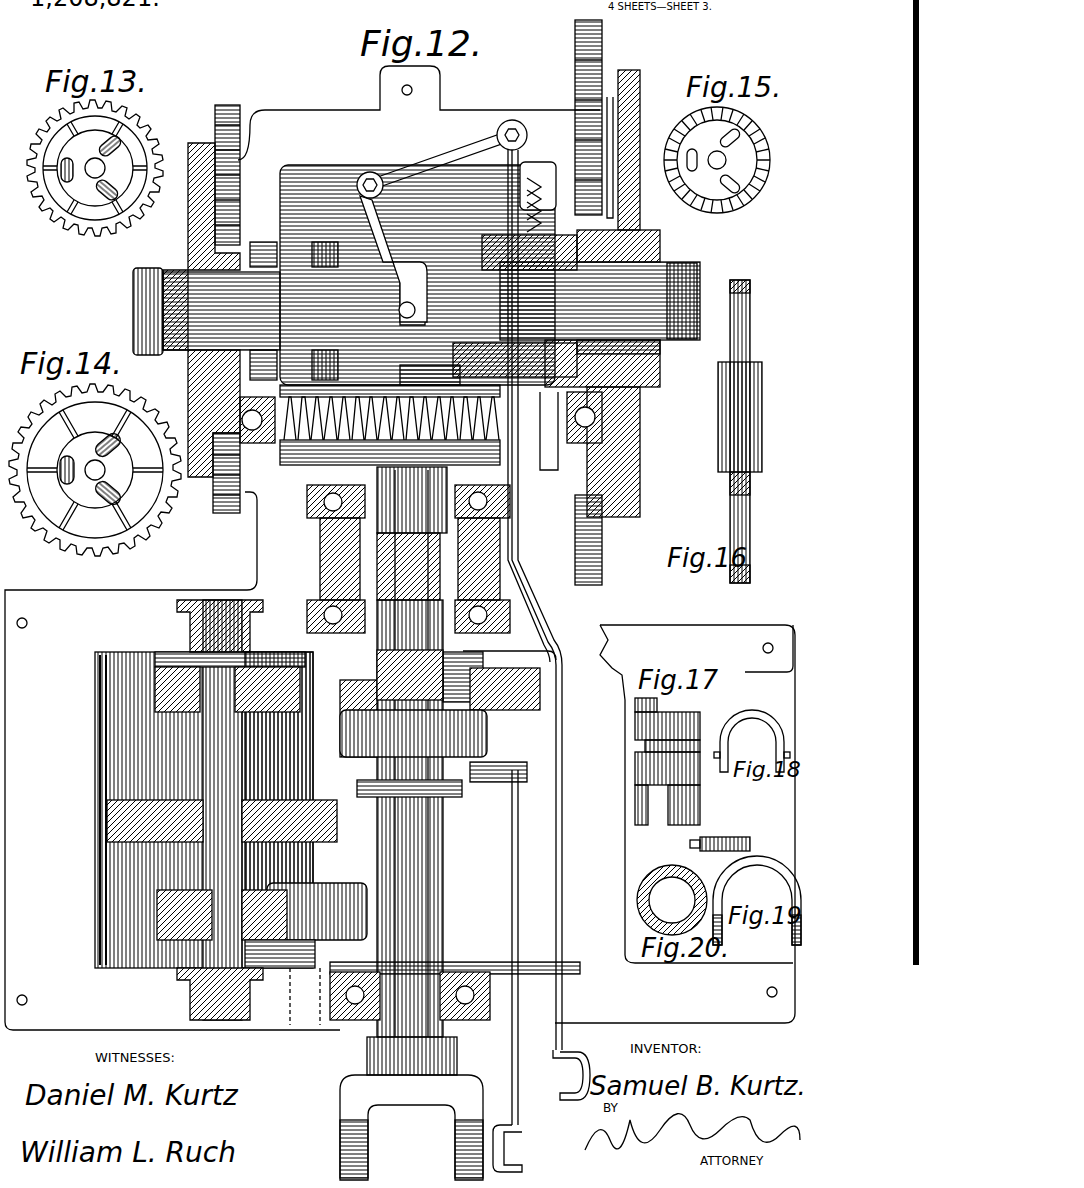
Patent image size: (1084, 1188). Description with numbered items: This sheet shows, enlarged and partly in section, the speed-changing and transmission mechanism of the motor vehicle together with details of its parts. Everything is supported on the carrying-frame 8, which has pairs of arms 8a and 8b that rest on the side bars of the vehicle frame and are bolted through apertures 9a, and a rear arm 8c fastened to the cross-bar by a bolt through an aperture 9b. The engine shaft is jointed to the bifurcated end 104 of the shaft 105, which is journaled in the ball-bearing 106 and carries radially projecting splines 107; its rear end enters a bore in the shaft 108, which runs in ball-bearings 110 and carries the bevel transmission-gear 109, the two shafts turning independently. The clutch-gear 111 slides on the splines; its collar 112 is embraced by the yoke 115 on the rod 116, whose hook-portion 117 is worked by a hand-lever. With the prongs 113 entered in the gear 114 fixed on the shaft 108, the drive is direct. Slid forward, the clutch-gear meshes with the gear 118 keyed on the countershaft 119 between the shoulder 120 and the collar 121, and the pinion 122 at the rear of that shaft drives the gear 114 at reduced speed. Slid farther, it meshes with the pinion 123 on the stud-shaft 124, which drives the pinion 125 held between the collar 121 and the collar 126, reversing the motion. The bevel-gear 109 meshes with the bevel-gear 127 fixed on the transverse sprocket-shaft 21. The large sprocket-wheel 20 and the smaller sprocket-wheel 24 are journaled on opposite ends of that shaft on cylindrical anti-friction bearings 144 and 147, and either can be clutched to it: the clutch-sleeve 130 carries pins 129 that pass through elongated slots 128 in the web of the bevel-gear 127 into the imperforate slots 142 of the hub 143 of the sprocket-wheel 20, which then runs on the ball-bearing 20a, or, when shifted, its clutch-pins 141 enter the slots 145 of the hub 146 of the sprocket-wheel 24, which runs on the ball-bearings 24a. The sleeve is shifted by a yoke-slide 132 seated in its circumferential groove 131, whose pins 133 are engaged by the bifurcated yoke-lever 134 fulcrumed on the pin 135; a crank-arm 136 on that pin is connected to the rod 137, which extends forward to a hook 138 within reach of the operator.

In FIG. 12, the carrying-frame 8 is at (268, 567).
In FIG. 12, the arms 8a is at (675, 809).
In FIG. 12, the arms 8b is at (22, 988).
In FIG. 12, the arm 8c is at (426, 88).
In FIG. 12, the apertures 9a is at (762, 1005).
In FIG. 12, the aperture 9b is at (404, 94).
In FIG. 12, the sprocket-wheel 20 is at (578, 64).
In FIG. 14, the sprocket-wheel 20 is at (138, 530).
In FIG. 12, the ball-bearing structure 20a is at (592, 424).
In FIG. 12, the sprocket-shaft 21 is at (640, 300).
In FIG. 16, the sprocket-shaft 21 is at (750, 527).
In FIG. 12, the sprocket-wheel 24 is at (232, 115).
In FIG. 13, the sprocket-wheel 24 is at (87, 238).
In FIG. 12, the ball-bearings 24a is at (257, 430).
In FIG. 12, the bifurcated end 104 is at (412, 1098).
In FIG. 12, the shaft 105 is at (425, 893).
In FIG. 12, the ball-bearing 106 is at (356, 1012).
In FIG. 12, the splines 107 is at (440, 856).
In FIG. 12, the shaft 108 is at (412, 533).
In FIG. 12, the bevel transmission-gear 109 is at (368, 440).
In FIG. 12, the ball-bearings 110 is at (330, 506).
In FIG. 12, the clutch-gear 111 is at (487, 738).
In FIG. 12, the collar 112 is at (448, 795).
In FIG. 12, the prongs 113 is at (345, 703).
In FIG. 12, the gear 114 is at (540, 672).
In FIG. 12, the yoke 115 is at (490, 768).
In FIG. 12, the rod 116 is at (513, 826).
In FIG. 12, the hook-portion 117 is at (522, 1143).
In FIG. 12, the gear 118 is at (335, 828).
In FIG. 12, the countershaft 119 is at (200, 985).
In FIG. 12, the shoulder 120 is at (248, 795).
In FIG. 12, the collar 121 is at (247, 866).
In FIG. 12, the pinion 122 is at (165, 672).
In FIG. 12, the pinion 123 is at (338, 900).
In FIG. 12, the stud-shaft 124 is at (320, 978).
In FIG. 12, the pinion 125 is at (160, 925).
In FIG. 12, the collar 126 is at (270, 950).
In FIG. 12, the bevel-gear 127 is at (500, 232).
In FIG. 15, the bevel-gear 127 is at (748, 202).
In FIG. 15, the elongated slots 128 is at (738, 140).
In FIG. 12, the pins 129 is at (585, 248).
In FIG. 17, the pins 129 is at (690, 868).
In FIG. 12, the clutch-sleeve 130 is at (417, 275).
In FIG. 17, the clutch-sleeve 130 is at (645, 765).
In FIG. 20, the clutch-sleeve 130 is at (648, 896).
In FIG. 12, the circumferential groove 131 is at (400, 375).
In FIG. 17, the circumferential groove 131 is at (645, 748).
In FIG. 12, the yoke-slide 132 is at (403, 332).
In FIG. 18, the yoke-slide 132 is at (737, 716).
In FIG. 12, the pins 133 is at (398, 313).
In FIG. 18, the pins 133 is at (782, 775).
In FIG. 12, the yoke-lever 134 is at (390, 200).
In FIG. 19, the yoke-lever 134 is at (770, 870).
In FIG. 12, the fulcrum-pin 135 is at (366, 173).
In FIG. 19, the fulcrum-pin 135 is at (730, 837).
In FIG. 12, the crank-arm 136 is at (440, 160).
In FIG. 12, the rod 137 is at (520, 175).
In FIG. 12, the hook 138 is at (570, 1087).
In FIG. 12, the clutch-pins 141 is at (325, 245).
In FIG. 17, the clutch-pins 141 is at (635, 705).
In FIG. 14, the elongated imperforate slots 142 is at (115, 492).
In FIG. 14, the hub 143 is at (88, 505).
In FIG. 12, the cylindrical anti-friction bearings 144 is at (640, 350).
In FIG. 12, the imperforate slots 145 is at (255, 250).
In FIG. 13, the imperforate slots 145 is at (112, 150).
In FIG. 13, the hub 146 is at (78, 190).
In FIG. 12, the cylindrical anti-friction bearings 147 is at (195, 290).